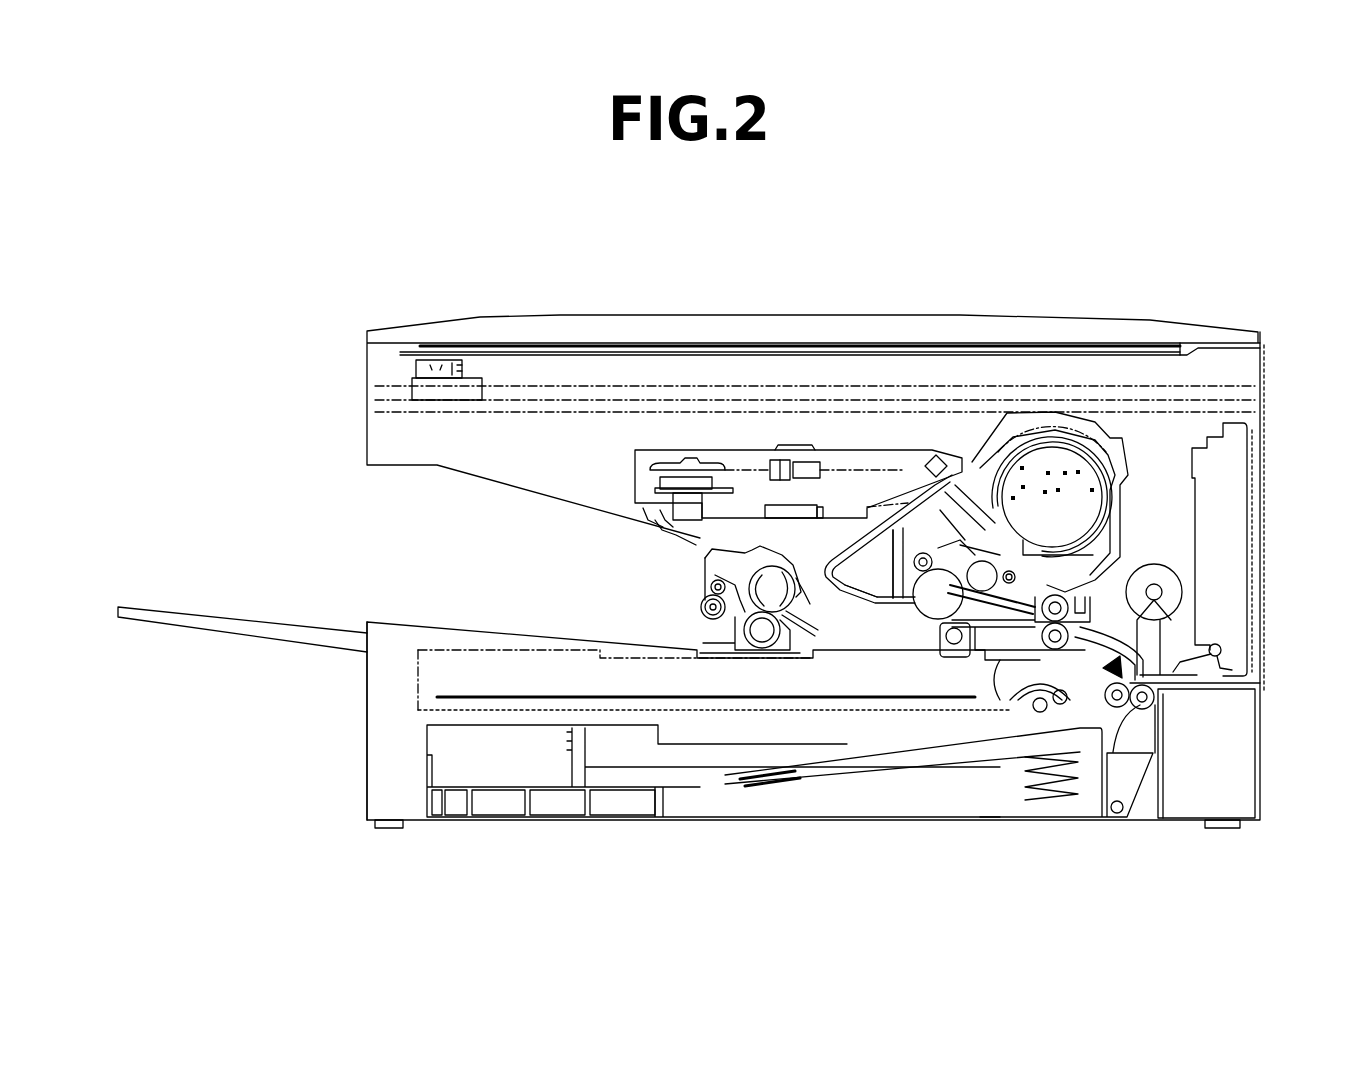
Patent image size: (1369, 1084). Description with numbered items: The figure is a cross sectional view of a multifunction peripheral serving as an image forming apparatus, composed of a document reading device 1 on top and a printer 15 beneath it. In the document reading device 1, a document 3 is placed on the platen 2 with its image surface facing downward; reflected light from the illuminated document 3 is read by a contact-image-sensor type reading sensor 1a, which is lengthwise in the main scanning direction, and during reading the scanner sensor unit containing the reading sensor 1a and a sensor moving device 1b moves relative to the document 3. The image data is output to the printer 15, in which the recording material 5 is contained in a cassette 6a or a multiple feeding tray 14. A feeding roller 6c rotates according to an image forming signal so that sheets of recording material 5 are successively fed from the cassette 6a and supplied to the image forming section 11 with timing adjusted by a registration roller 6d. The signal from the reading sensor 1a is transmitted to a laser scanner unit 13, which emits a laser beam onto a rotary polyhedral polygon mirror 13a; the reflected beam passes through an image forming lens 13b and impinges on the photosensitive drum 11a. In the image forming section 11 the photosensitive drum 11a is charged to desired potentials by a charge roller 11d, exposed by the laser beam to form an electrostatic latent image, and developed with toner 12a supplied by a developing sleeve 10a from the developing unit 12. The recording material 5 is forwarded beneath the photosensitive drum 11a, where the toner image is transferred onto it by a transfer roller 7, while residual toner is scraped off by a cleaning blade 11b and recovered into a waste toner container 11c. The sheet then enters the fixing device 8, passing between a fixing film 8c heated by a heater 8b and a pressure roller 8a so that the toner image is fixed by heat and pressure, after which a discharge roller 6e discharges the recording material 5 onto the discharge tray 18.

The document reading device 1 is at (358, 346).
The reading sensor 1a is at (440, 362).
The sensor moving device 1b is at (472, 388).
The platen 2 is at (573, 344).
The document 3 is at (622, 352).
The recording material 5 is at (1077, 815).
The cassette 6a is at (548, 767).
The feeding roller 6c is at (1000, 700).
The registration roller 6d is at (1128, 583).
The discharge roller 6e is at (705, 590).
The transfer roller 7 is at (982, 652).
The fixing device 8 is at (733, 592).
The pressure roller 8a is at (760, 628).
The heater 8b is at (783, 575).
The fixing film 8c is at (803, 592).
The developing sleeve 10a is at (1023, 540).
The image forming section 11 is at (840, 522).
The photosensitive drum 11a is at (940, 660).
The cleaning blade 11b is at (877, 627).
The waste toner container 11c is at (880, 600).
The charge roller 11d is at (937, 553).
The developing unit 12 is at (1127, 493).
The toner 12a is at (1048, 473).
The laser scanner unit 13 is at (640, 440).
The polygon mirror 13a is at (688, 462).
The image forming lens 13b is at (797, 448).
The multiple feeding tray 14 is at (1223, 497).
The printer 15 is at (108, 422).
The discharge tray 18 is at (300, 627).